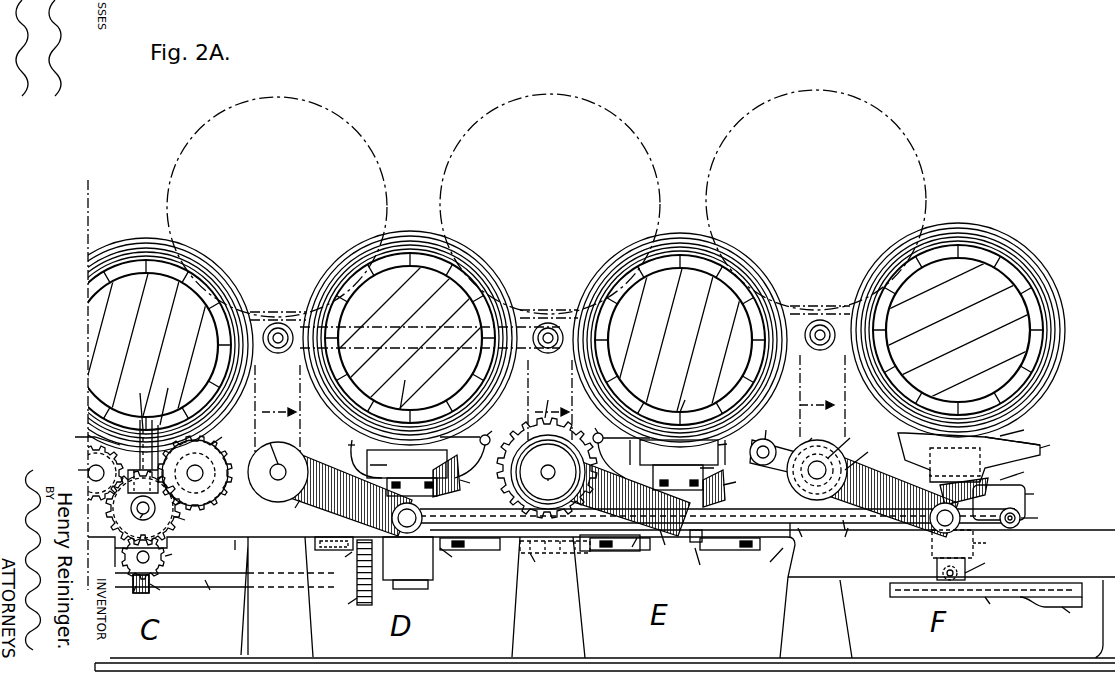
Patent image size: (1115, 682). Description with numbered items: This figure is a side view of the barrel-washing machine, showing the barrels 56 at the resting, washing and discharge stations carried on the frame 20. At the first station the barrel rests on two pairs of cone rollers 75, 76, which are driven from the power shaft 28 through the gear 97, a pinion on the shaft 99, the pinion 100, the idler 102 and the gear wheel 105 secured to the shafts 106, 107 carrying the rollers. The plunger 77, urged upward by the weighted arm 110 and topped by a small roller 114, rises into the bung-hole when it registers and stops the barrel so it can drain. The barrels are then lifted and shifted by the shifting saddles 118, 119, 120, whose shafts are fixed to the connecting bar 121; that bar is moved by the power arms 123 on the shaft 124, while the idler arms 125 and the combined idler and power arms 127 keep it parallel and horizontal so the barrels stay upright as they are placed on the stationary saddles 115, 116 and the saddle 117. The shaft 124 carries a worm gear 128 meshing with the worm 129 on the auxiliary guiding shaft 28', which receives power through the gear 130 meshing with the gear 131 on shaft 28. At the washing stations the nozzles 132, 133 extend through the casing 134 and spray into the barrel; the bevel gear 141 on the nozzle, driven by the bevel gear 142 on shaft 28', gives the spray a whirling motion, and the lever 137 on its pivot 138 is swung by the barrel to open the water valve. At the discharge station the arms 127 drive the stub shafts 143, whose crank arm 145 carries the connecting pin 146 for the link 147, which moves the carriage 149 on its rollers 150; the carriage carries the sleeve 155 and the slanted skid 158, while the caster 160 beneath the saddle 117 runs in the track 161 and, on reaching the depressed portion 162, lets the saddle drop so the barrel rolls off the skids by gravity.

The barrel 56 is at (552, 337).
The frame 20 is at (601, 600).
The power shaft 28 is at (225, 590).
The auxiliary guiding shaft 28' is at (717, 535).
The cone rollers 75 is at (106, 456).
The roller 114 is at (140, 424).
The plunger 77 is at (169, 421).
The shaft 106 is at (89, 473).
The arm 110 is at (143, 508).
The cone rollers 76 is at (198, 467).
The gear wheel 105 is at (195, 477).
The idler 102 is at (161, 508).
The pinion 100 is at (160, 557).
The shaft 99 is at (136, 592).
The gear 97 is at (154, 589).
The idler arms 125 is at (345, 492).
The shaft 107 is at (278, 466).
The stationary saddle 115 is at (356, 457).
The casing 134 is at (542, 468).
The shifting saddle 118 is at (464, 476).
The bevel gear 141 is at (408, 546).
The gear 130 is at (334, 550).
The gear 131 is at (348, 577).
The bevel gear 142 is at (600, 554).
The worm 129 is at (555, 557).
The worm gear 128 is at (547, 451).
The shifting saddle 119 is at (657, 494).
The pivot 138 is at (548, 472).
The shaft 124 is at (550, 480).
The lever 137 is at (545, 445).
The nozzle 132 is at (415, 388).
The nozzle 133 is at (690, 398).
The stationary saddle 116 is at (691, 450).
The power arms 123 is at (613, 548).
The connecting bar 121 is at (806, 537).
The combined idler and power arms 127 is at (851, 535).
The crank arm 145 is at (790, 451).
The connecting pin 146 is at (765, 440).
The shifting saddle 120 is at (935, 493).
The stub shaft 143 is at (829, 461).
The connecting link 147 is at (842, 466).
The saddle 117 is at (974, 451).
The skid 158 is at (1031, 443).
The carriage 149 is at (1016, 502).
The rollers 150 is at (1032, 518).
The sleeve 155 is at (971, 530).
The caster 160 is at (974, 567).
The track 161 is at (986, 601).
The depressed portion 162 is at (1055, 612).